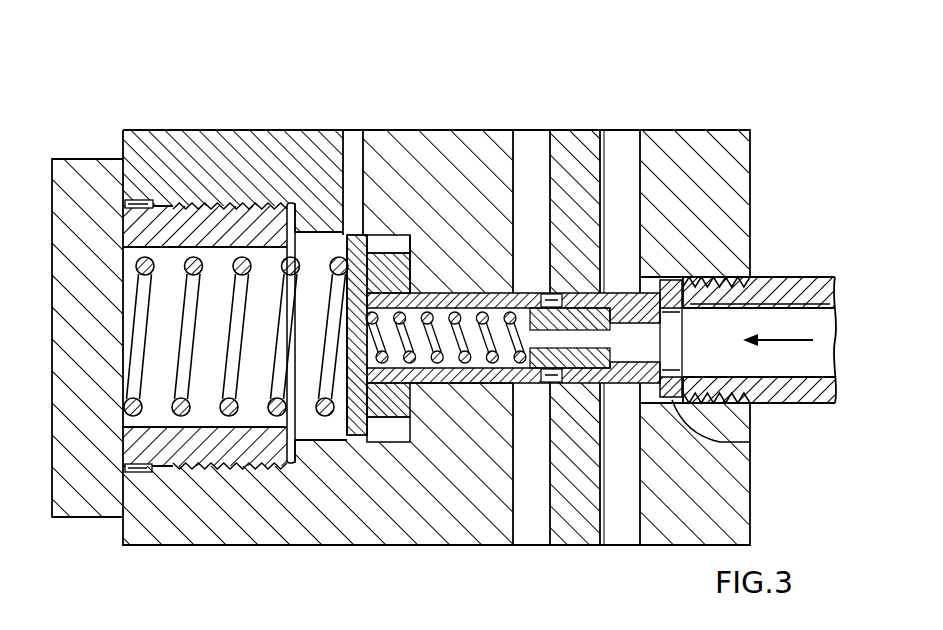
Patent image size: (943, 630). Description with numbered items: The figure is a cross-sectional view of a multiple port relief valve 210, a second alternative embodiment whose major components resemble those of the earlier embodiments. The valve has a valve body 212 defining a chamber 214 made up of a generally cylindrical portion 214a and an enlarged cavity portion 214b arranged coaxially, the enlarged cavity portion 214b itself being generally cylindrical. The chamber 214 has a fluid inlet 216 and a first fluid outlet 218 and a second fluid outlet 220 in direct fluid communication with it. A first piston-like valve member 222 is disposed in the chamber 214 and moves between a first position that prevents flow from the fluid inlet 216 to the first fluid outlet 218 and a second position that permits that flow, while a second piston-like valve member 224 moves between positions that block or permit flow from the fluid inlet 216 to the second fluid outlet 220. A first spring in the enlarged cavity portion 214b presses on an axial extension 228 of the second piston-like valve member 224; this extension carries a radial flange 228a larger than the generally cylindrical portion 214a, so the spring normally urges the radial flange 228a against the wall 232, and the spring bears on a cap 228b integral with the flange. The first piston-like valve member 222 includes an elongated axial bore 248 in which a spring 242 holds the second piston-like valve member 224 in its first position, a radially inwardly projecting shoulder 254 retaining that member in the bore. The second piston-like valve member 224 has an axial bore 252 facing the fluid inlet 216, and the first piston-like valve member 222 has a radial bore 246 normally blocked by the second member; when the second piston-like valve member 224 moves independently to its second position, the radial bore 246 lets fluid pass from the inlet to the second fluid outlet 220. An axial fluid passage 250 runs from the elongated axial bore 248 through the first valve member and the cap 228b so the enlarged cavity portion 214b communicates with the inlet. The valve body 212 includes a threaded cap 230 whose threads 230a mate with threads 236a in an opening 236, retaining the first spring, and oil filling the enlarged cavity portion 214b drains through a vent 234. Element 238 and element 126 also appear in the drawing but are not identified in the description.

The multiple port relief valve 210 is at (430, 80).
The valve body 212 is at (690, 127).
The chamber 214 is at (462, 292).
The generally cylindrical portion 214a is at (530, 292).
The enlarged cavity portion 214b is at (308, 222).
The fluid inlet 216 is at (717, 330).
The first fluid outlet 218 is at (620, 140).
The second fluid outlet 220 is at (528, 140).
The first piston-like valve member 222 is at (487, 395).
The second piston-like valve member 224 is at (603, 457).
The axial extension 228 is at (386, 240).
The radial flange 228a is at (445, 292).
The cap 228b is at (360, 437).
The threaded cap 230 is at (73, 490).
The threads 230a is at (168, 130).
The wall 232 is at (410, 365).
The vent 234 is at (355, 230).
The opening 236 is at (135, 457).
The mating threads 236a is at (233, 203).
The passage 238 is at (750, 442).
The spring 242 is at (392, 442).
The radial bore 246 is at (560, 294).
The elongated axial bore 248 is at (453, 358).
The axial fluid passage 250 is at (357, 336).
The axial bore 252 is at (655, 290).
The radially inwardly projecting shoulder 254 is at (587, 402).
The spring 126 is at (192, 256).